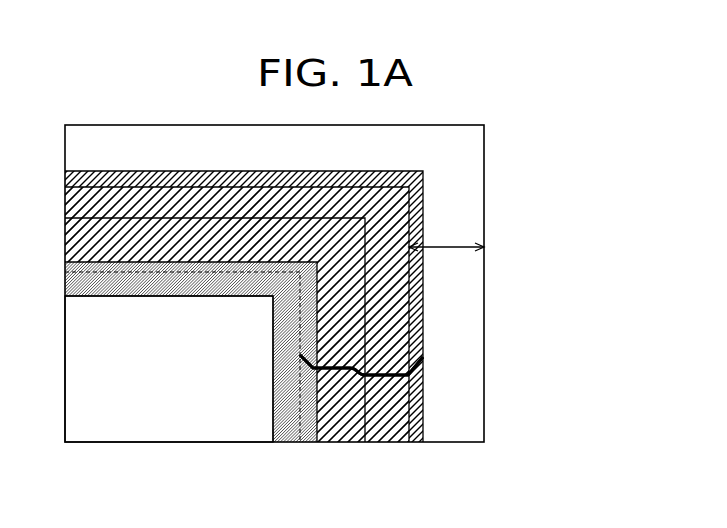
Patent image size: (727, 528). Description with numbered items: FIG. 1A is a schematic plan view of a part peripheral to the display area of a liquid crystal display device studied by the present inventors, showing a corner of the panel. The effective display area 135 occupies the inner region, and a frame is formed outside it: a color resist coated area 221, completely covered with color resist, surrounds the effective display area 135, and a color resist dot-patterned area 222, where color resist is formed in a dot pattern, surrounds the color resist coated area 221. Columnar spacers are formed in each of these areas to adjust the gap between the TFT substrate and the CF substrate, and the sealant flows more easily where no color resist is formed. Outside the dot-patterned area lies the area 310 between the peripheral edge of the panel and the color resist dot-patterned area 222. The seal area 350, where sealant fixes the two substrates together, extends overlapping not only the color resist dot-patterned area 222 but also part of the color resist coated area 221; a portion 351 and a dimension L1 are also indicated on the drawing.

The effective display area 135 is at (67, 455).
The color resist coated area 221 is at (274, 455).
The color resist dot-patterned area 222 is at (318, 455).
The area between peripheral edge and color resist dot-patterned area 310 is at (413, 455).
The seal area 350 is at (365, 402).
The upper portion 351 is at (367, 325).
The length L1 is at (453, 247).